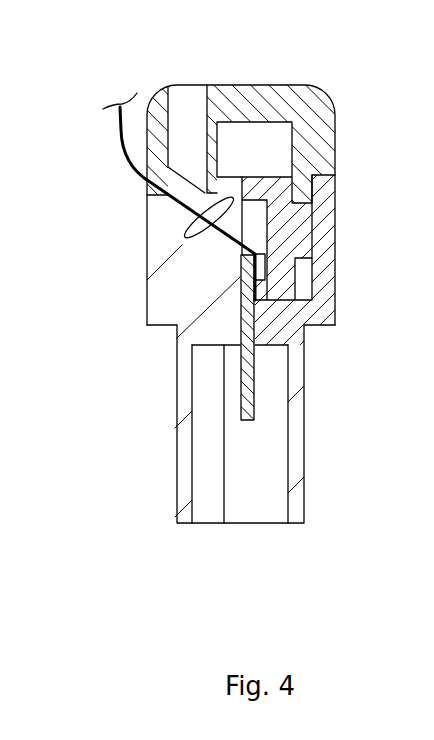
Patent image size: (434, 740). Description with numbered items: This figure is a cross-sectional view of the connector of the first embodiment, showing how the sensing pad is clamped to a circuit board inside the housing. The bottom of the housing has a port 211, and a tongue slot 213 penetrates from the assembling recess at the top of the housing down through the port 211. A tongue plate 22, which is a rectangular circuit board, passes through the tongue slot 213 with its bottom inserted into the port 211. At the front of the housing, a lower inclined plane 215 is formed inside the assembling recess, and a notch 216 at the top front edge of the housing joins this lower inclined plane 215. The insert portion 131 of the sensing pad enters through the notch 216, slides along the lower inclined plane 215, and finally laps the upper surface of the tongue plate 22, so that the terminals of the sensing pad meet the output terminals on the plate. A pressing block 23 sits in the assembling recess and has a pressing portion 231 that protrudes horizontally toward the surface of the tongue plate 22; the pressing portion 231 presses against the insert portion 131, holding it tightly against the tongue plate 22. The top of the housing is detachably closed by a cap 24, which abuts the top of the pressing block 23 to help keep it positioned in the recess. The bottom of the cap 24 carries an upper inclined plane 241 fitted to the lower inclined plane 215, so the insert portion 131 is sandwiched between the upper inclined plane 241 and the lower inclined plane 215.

The cap 24 is at (298, 92).
The upper inclined plane 241 is at (182, 172).
The notch 216 is at (150, 187).
The insert portion 131 is at (121, 135).
The pressing block 23 is at (305, 223).
The pressing portion 231 is at (255, 297).
The tongue slot 213 is at (242, 333).
The lower inclined plane 215 is at (235, 197).
The port 211 is at (298, 468).
The tongue plate 22 is at (247, 420).